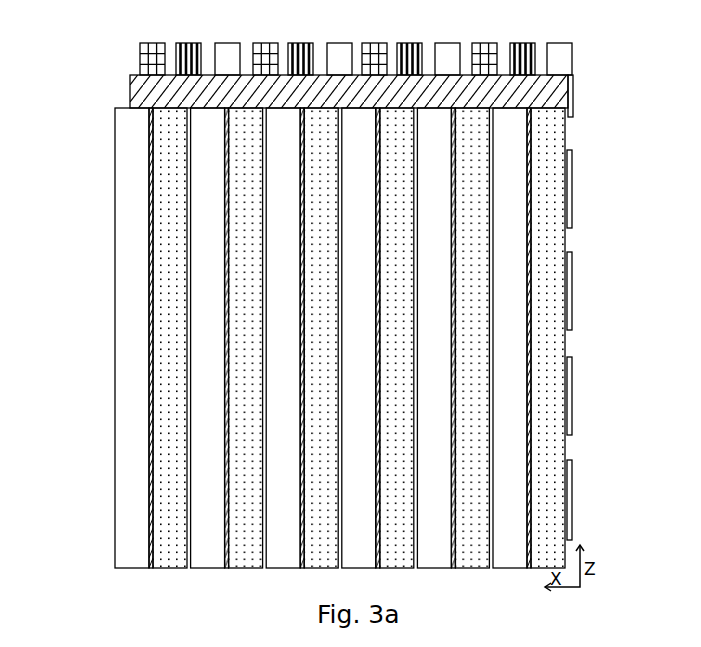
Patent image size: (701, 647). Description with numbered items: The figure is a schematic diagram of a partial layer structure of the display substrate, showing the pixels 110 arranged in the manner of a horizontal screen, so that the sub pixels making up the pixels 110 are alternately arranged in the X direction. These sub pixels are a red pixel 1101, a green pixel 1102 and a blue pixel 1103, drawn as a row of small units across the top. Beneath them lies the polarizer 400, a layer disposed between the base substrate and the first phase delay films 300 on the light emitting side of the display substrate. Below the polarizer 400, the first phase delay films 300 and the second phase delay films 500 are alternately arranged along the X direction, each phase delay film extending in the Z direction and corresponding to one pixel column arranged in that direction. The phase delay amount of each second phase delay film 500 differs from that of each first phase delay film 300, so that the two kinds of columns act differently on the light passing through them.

The pixels 110 is at (305, 70).
The red pixel 1101 is at (267, 49).
The green pixel 1102 is at (355, 49).
The blue pixel 1103 is at (394, 70).
The polarizer 400 is at (382, 89).
The first phase delay films 300 is at (393, 338).
The second phase delay films 500 is at (376, 338).